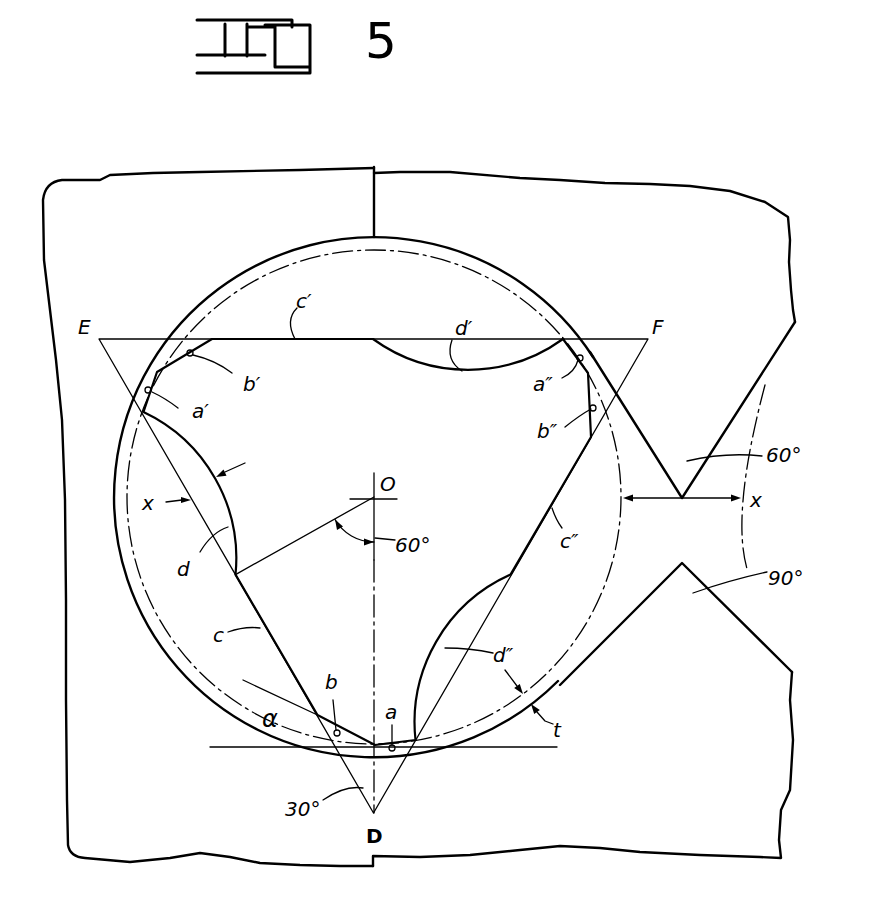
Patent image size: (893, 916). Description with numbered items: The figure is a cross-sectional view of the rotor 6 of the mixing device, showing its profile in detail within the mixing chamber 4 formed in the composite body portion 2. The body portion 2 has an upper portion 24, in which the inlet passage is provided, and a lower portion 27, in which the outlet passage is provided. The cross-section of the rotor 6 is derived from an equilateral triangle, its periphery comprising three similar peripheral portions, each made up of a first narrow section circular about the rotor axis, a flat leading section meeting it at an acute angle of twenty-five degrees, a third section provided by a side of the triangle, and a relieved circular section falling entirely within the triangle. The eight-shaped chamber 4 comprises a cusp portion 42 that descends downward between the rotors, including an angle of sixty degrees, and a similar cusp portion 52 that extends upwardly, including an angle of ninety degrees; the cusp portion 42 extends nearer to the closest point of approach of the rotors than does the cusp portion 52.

The composite body portion 2 is at (155, 187).
The upper portion 24 is at (633, 198).
The mixing chamber 4 is at (402, 280).
The rotor 6 is at (378, 422).
The cusp portion 42 is at (696, 422).
The cusp portion 52 is at (685, 664).
The lower portion 27 is at (600, 838).